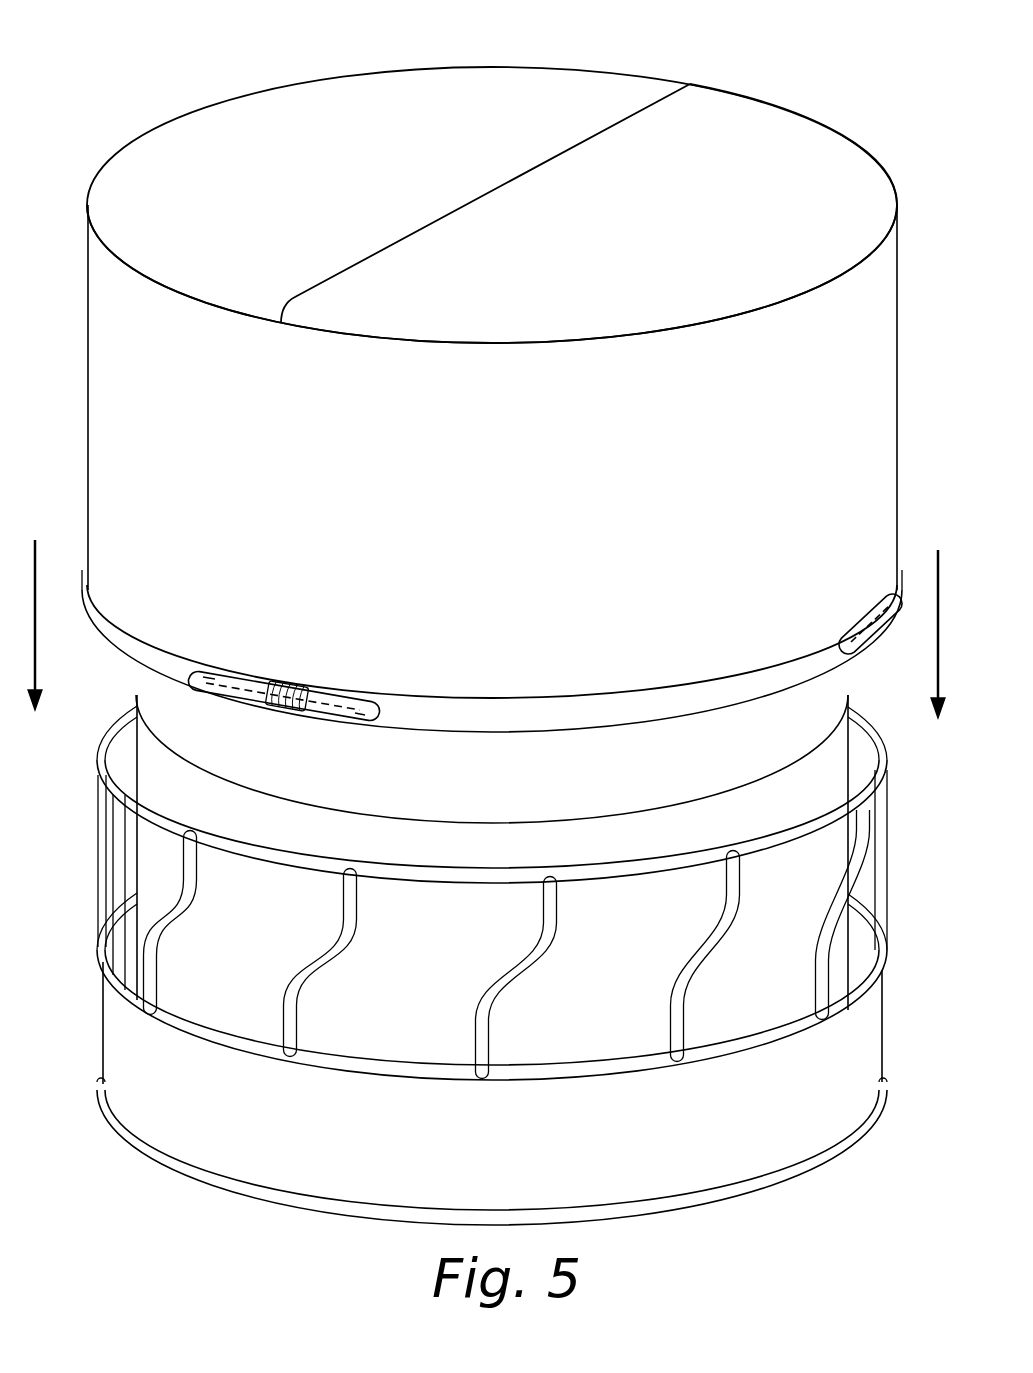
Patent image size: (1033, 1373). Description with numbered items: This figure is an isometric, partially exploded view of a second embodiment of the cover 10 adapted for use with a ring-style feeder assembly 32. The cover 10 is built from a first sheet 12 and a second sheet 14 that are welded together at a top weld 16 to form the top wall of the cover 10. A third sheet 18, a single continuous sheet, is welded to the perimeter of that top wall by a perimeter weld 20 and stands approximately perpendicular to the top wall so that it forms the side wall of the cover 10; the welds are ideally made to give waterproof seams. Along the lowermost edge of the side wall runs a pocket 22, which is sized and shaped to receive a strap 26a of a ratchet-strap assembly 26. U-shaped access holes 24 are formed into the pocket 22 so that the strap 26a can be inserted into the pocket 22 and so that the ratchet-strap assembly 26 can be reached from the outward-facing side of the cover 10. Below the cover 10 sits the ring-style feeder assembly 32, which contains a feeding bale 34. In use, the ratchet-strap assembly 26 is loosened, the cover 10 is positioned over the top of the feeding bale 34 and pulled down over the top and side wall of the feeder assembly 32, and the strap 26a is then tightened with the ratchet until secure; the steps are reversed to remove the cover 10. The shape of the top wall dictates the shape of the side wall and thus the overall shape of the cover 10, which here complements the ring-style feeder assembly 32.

The cover 10 is at (148, 17).
The first sheet 12 is at (381, 86).
The second sheet 14 is at (825, 143).
The top weld 16 is at (667, 97).
The third sheet 18 is at (98, 426).
The perimeter weld 20 is at (188, 302).
The pocket 22 is at (121, 640).
The access holes 24 is at (197, 673).
The ratchet-strap assembly 26 is at (292, 681).
The strap 26a is at (233, 686).
The ring-style feeder assembly 32 is at (152, 1160).
The feeding bale 34 is at (826, 700).